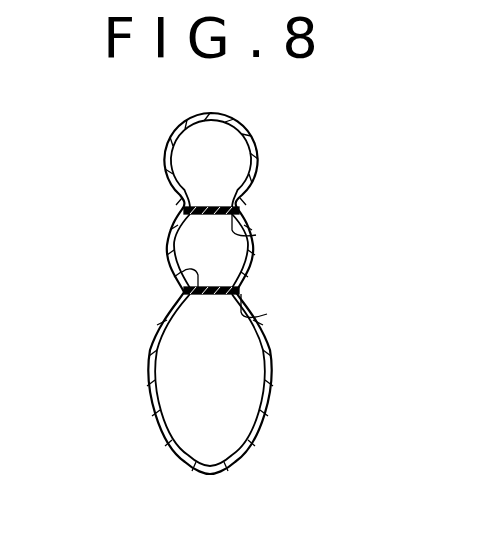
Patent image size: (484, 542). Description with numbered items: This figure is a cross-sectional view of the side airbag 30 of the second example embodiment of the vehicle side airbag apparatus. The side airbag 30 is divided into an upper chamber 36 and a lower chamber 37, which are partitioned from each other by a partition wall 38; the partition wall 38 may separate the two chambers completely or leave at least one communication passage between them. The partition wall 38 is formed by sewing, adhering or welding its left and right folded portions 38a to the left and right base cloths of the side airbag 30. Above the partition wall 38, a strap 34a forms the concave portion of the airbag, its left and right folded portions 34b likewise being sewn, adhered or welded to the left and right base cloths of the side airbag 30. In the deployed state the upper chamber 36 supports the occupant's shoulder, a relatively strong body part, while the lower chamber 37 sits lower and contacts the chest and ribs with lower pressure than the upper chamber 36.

The side airbag 30 is at (266, 401).
The strap 34a is at (214, 207).
The folded portions of the strap 34b is at (172, 190).
The upper chamber 36 is at (190, 237).
The lower chamber 37 is at (182, 397).
The partition wall 38 is at (208, 295).
The folded portions of the partition wall 38a is at (182, 272).